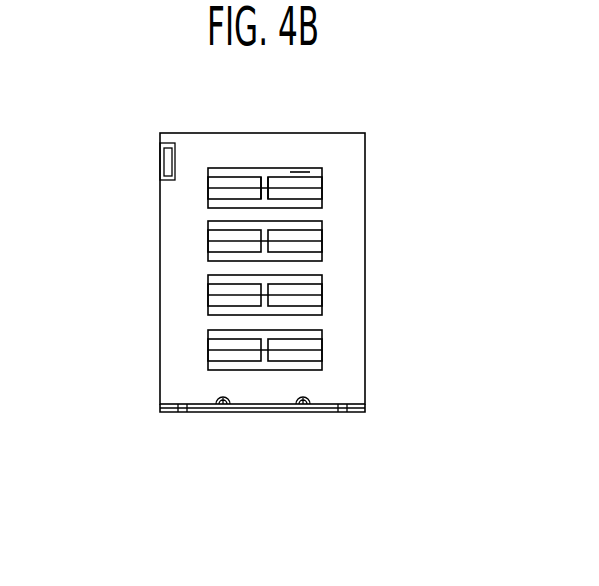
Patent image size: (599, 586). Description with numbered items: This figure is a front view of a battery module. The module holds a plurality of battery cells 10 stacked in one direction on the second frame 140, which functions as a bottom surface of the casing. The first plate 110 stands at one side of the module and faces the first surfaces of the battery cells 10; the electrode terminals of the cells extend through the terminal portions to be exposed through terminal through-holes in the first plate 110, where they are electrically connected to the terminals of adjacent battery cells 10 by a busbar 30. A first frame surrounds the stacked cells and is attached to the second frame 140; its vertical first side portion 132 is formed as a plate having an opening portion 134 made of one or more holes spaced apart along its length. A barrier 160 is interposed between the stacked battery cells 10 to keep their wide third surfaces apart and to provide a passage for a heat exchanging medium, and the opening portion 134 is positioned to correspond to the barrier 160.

The battery cell 10 is at (318, 233).
The busbar 30 is at (166, 166).
The first plate 110 is at (160, 152).
The first side portion 132 is at (345, 305).
The opening portion 134 is at (300, 174).
The second frame 140 is at (262, 413).
The barrier 160 is at (264, 174).